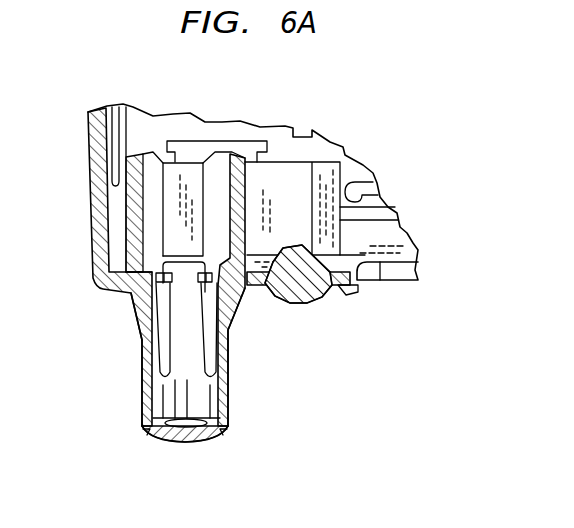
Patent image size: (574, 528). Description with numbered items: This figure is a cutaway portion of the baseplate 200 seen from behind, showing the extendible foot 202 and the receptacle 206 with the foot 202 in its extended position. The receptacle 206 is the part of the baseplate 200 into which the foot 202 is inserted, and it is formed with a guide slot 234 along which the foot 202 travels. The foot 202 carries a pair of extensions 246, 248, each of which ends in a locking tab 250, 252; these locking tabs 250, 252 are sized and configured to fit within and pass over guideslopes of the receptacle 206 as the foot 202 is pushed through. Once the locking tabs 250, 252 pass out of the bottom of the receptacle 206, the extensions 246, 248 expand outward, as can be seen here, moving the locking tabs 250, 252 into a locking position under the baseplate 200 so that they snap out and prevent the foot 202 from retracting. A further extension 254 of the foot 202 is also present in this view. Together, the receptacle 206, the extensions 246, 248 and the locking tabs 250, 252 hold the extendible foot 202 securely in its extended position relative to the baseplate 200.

The baseplate 200 is at (232, 252).
The extendible foot 202 is at (142, 397).
The receptacle 206 is at (150, 238).
The guide slot 234 is at (183, 181).
The extension 246 is at (142, 370).
The extension 248 is at (230, 385).
The locking tab 250 is at (133, 309).
The locking tab 252 is at (232, 306).
The extension 254 is at (207, 400).